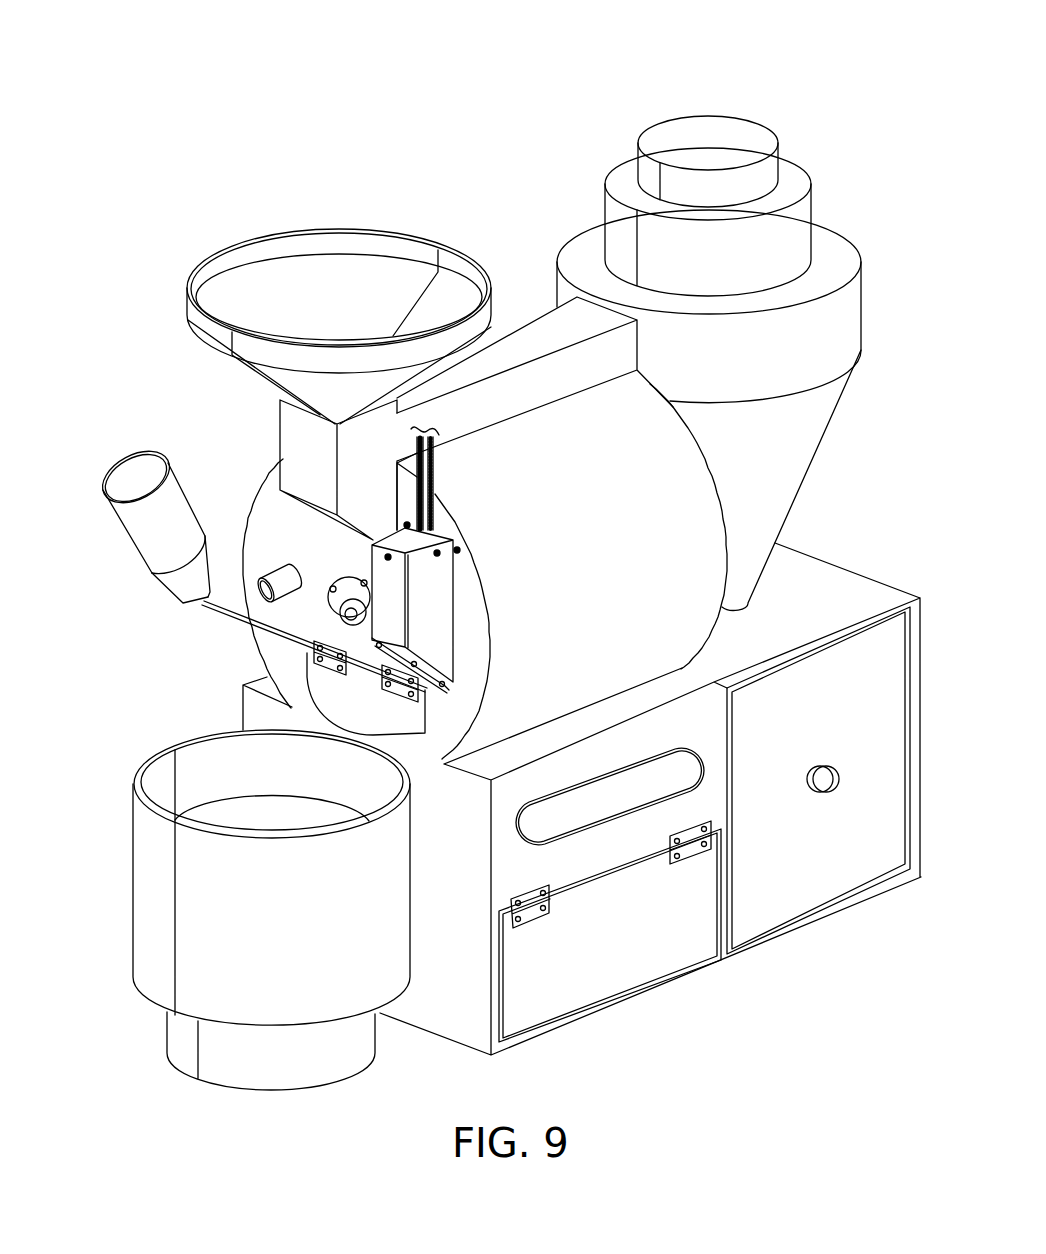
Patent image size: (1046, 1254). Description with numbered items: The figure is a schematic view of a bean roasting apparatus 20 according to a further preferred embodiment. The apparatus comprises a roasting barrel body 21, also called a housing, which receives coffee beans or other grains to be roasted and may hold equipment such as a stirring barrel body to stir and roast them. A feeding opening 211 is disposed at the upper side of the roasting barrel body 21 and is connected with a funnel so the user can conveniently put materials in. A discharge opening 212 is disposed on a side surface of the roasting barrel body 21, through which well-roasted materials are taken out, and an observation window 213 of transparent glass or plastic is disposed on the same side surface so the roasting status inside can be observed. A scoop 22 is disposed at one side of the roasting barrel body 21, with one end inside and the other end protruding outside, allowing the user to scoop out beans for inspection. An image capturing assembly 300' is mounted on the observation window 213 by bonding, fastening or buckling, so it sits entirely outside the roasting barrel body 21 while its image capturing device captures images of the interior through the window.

The bean roasting apparatus 20 is at (953, 40).
The roasting barrel body 21 is at (690, 632).
The feeding opening 211 is at (347, 413).
The discharge opening 212 is at (318, 678).
The observation window 213 is at (462, 652).
The scoop 22 is at (283, 580).
The image capturing assembly 300' is at (440, 607).